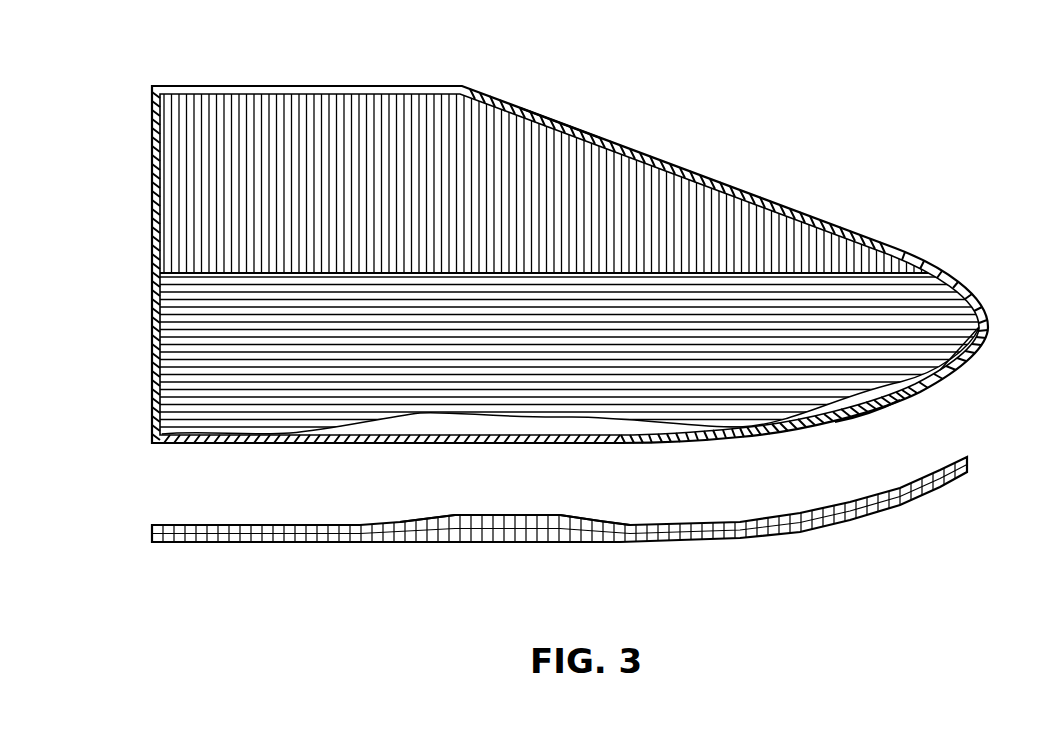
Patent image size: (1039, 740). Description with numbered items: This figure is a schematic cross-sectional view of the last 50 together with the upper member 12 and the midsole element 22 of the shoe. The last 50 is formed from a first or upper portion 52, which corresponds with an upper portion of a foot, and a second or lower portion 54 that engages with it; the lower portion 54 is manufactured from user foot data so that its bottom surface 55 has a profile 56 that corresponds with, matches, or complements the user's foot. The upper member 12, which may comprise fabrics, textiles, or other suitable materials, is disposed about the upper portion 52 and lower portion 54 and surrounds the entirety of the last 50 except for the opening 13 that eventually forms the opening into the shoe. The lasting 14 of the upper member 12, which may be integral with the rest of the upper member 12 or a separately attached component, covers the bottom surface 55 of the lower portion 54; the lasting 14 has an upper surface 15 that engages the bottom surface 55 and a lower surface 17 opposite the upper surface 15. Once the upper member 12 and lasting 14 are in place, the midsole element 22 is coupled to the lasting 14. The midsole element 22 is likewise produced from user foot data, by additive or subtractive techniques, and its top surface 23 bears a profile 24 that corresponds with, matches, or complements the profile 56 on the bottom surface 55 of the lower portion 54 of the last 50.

The upper member 12 is at (550, 113).
The opening 13 is at (259, 83).
The lasting 14 is at (204, 448).
The upper surface 15 is at (942, 364).
The lower surface 17 is at (850, 423).
The midsole element 22 is at (257, 547).
The top surface 23 is at (574, 515).
The profile 24 is at (468, 516).
The last 50 is at (690, 174).
The upper portion 52 is at (152, 165).
The lower portion 54 is at (152, 333).
The bottom surface 55 is at (418, 418).
The profile 56 is at (738, 431).